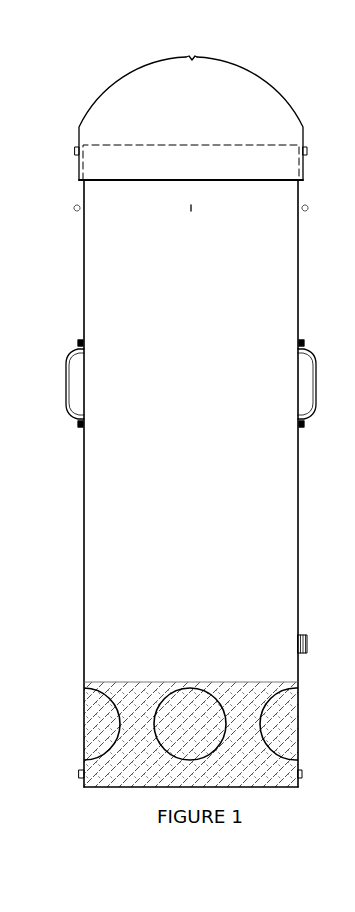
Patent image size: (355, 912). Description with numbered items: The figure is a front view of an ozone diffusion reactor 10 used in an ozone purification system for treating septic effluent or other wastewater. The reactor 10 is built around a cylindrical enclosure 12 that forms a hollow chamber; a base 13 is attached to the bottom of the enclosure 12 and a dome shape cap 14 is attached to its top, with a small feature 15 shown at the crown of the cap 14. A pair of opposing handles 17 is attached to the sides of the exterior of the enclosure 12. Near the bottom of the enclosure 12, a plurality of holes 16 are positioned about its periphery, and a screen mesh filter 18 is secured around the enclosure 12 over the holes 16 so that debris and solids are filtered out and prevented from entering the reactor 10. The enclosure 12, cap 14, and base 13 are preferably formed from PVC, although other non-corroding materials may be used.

The ozone diffusion reactor 10 is at (103, 50).
The cylindrical enclosure 12 is at (83, 302).
The base 13 is at (127, 787).
The dome shape cap 14 is at (102, 95).
The vent nipple 15 is at (192, 58).
The holes 16 is at (117, 703).
The handles 17 is at (66, 389).
The screen mesh filter 18 is at (248, 697).